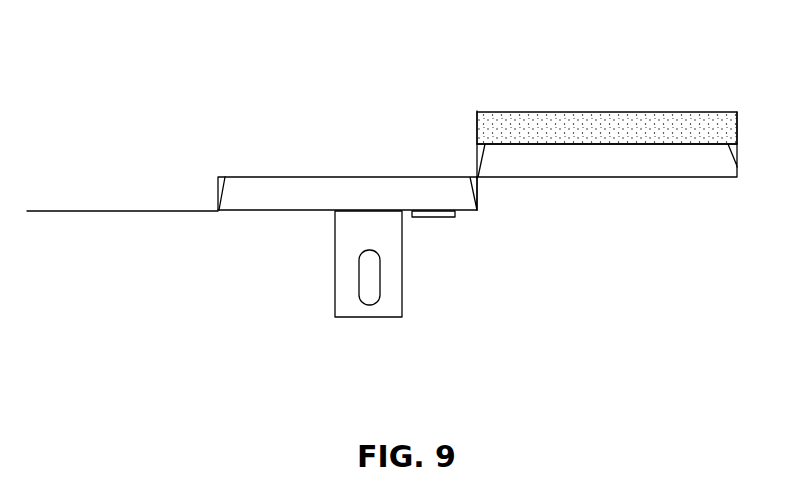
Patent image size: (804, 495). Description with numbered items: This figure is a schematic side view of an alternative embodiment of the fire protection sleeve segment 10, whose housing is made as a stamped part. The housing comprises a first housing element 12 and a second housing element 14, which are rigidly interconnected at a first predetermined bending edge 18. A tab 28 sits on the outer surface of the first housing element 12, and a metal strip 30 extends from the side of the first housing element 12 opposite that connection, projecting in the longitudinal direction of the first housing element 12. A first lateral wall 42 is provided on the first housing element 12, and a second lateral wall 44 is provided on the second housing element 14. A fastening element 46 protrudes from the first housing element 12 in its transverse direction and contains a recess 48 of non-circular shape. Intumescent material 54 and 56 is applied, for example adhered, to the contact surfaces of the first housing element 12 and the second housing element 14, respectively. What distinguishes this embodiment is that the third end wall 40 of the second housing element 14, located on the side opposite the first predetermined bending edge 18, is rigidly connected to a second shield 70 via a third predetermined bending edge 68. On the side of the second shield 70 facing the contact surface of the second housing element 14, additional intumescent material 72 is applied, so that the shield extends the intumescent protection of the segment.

The fire protection sleeve segment 10 is at (160, 340).
The first housing element 12 is at (283, 212).
The second housing element 14 is at (617, 178).
The first predetermined bending edge 18 is at (479, 180).
The tab 28 is at (438, 220).
The metal strip 30 is at (107, 212).
The third end wall 40 is at (738, 167).
The first lateral wall 42 is at (322, 188).
The second lateral wall 44 is at (514, 166).
The fastening element 46 is at (343, 310).
The recess 48 is at (367, 300).
The intumescent material 54 is at (222, 178).
The intumescent material 56 is at (479, 156).
The third predetermined bending edge 68 is at (738, 138).
The second shield 70 is at (627, 112).
The additional intumescent material 72 is at (568, 128).